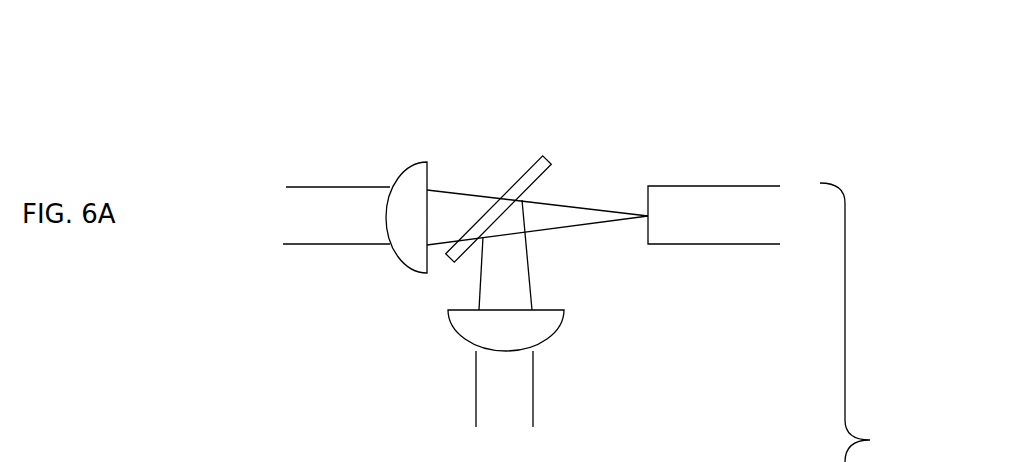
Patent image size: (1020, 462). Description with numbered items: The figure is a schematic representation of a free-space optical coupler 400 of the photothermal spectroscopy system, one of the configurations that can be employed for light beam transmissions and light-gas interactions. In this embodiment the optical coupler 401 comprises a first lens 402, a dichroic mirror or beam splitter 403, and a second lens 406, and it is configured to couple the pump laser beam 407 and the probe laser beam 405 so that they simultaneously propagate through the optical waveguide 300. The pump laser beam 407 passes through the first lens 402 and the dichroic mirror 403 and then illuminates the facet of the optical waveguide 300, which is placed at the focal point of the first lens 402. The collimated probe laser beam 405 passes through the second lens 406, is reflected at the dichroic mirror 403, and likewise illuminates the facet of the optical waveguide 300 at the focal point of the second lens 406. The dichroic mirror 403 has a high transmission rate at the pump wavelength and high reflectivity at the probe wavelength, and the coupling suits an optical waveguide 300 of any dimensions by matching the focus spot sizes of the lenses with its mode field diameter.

The optical waveguide 300 is at (726, 249).
The optical coupler 400 is at (873, 322).
The optical coupler 401 is at (708, 135).
The first lens 402 is at (410, 163).
The dichroic mirror 403 is at (533, 167).
The probe laser beam 405 is at (493, 415).
The second lens 406 is at (447, 325).
The pump laser beam 407 is at (325, 223).